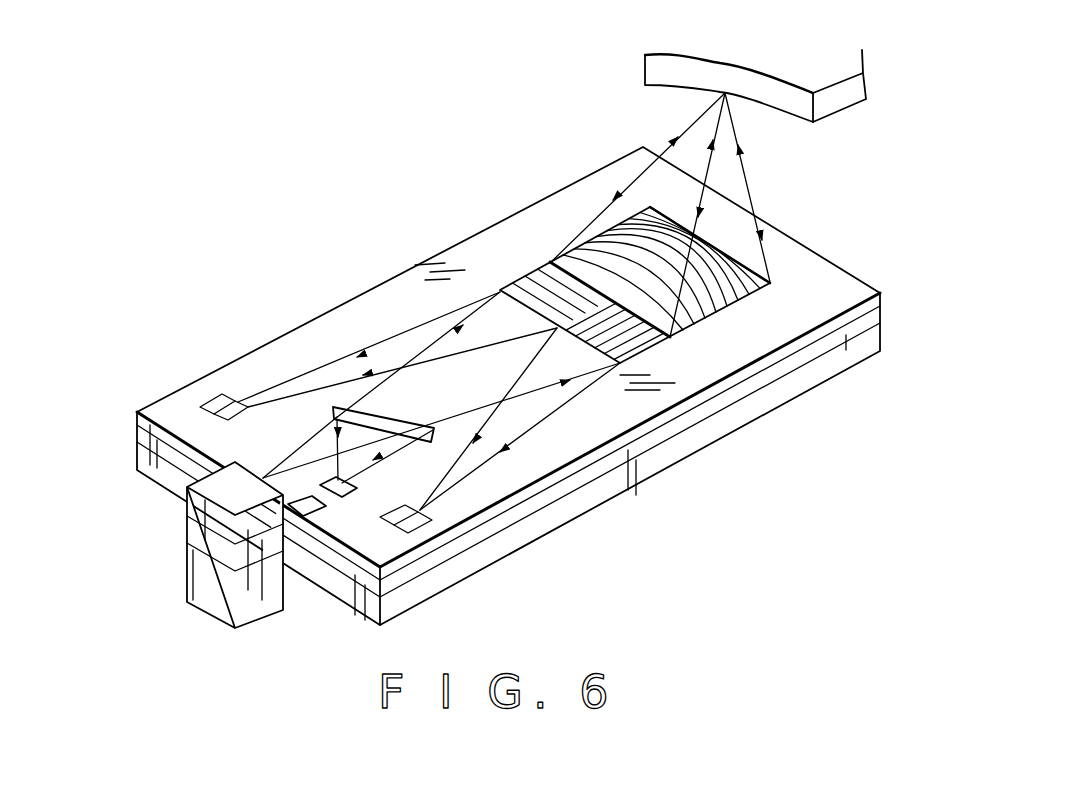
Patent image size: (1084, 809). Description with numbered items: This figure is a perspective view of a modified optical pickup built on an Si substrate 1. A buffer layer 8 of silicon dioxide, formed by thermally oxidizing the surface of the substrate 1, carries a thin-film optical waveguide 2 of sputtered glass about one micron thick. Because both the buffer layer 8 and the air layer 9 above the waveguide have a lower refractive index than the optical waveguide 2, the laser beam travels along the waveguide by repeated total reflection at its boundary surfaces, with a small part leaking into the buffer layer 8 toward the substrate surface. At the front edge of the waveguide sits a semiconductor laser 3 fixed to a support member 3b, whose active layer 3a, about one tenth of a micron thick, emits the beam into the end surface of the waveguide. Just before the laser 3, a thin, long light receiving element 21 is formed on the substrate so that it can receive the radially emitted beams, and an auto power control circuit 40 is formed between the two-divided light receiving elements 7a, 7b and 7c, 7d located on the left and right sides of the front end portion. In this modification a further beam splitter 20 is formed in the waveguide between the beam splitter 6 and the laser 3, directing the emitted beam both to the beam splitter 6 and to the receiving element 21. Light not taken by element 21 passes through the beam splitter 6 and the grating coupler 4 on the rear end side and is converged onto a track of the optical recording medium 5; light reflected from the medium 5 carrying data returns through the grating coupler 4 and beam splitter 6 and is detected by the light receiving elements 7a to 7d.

The Si substrate 1 is at (843, 355).
The optical waveguide 2 is at (850, 293).
The semiconductor laser 3 is at (178, 540).
The active layer 3a is at (187, 505).
The support member 3b is at (203, 592).
The grating coupler 4 is at (747, 277).
The optical recording medium 5 is at (843, 98).
The beam splitter 6 is at (640, 347).
The light receiving element 7a is at (213, 402).
The light receiving element 7b is at (238, 420).
The light receiving element 7c is at (405, 506).
The light receiving element 7d is at (421, 522).
The SiO2 buffer layer 8 is at (873, 323).
The air layer 9 is at (412, 153).
The further beam splitter 20 is at (336, 406).
The light receiving element 21 is at (340, 500).
The auto power control (APC) circuit 40 is at (331, 508).